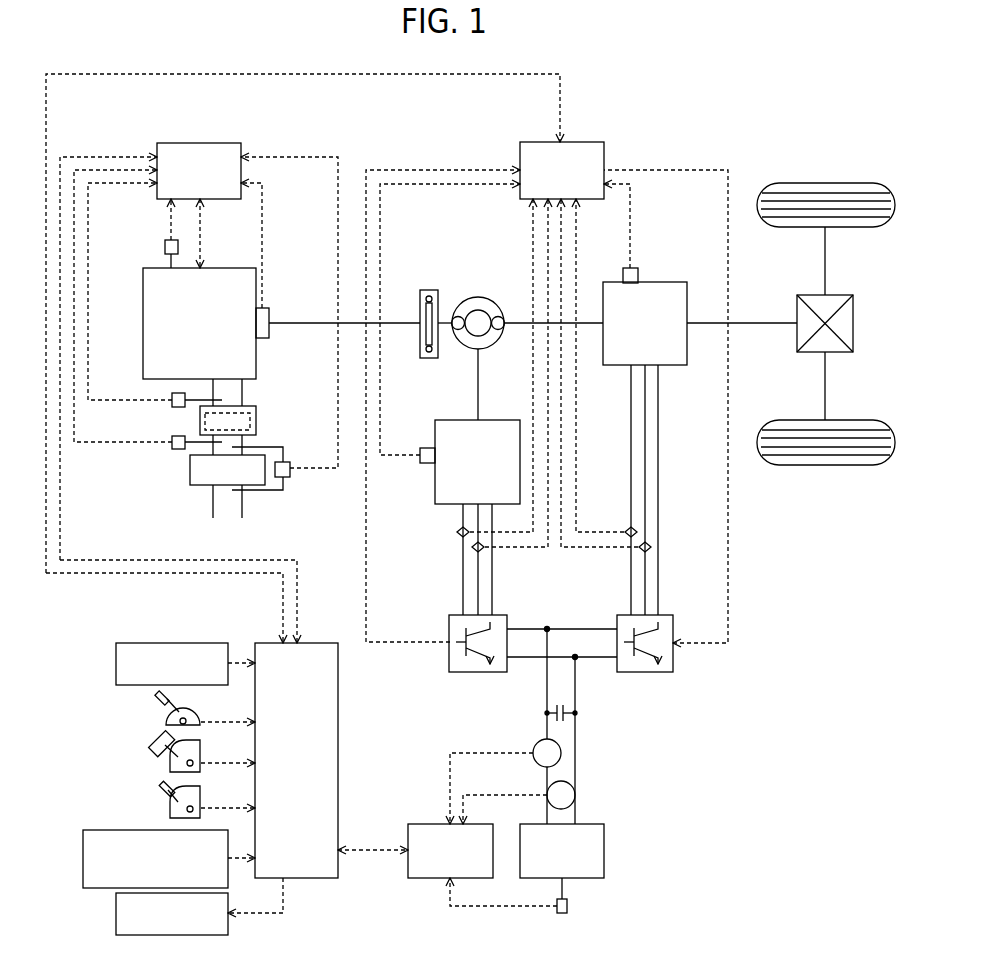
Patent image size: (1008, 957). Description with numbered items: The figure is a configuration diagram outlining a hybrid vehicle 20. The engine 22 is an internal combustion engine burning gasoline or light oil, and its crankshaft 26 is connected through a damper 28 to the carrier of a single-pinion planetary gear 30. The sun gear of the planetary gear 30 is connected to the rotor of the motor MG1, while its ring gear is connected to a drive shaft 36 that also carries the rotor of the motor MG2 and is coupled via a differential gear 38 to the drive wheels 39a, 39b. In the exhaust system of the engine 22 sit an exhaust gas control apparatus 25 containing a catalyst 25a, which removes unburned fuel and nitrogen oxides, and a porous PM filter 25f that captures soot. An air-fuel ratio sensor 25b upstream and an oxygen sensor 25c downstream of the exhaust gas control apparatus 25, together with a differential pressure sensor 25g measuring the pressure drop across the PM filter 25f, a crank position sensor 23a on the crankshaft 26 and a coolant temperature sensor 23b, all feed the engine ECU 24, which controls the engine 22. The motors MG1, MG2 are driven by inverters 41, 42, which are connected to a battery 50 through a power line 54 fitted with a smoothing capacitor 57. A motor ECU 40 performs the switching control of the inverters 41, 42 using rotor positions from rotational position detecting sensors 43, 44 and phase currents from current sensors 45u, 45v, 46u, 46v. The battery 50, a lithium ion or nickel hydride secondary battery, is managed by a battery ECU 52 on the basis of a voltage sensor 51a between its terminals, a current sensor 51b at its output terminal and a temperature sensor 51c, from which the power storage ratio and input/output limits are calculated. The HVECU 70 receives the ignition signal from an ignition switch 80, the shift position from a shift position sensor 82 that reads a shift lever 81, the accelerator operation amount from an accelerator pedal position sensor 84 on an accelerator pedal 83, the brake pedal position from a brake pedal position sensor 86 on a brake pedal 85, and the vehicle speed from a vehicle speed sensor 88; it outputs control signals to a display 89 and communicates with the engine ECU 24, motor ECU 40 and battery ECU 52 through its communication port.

The hybrid vehicle 20 is at (673, 112).
The engine 22 is at (220, 268).
The crank position sensor 23a is at (264, 308).
The coolant temperature sensor 23b is at (165, 247).
The engine ECU 24 is at (219, 143).
The exhaust gas control apparatus 25 is at (258, 416).
The catalyst 25a is at (255, 426).
The air-fuel ratio sensor 25b is at (172, 398).
The oxygen sensor 25c is at (172, 441).
The PM filter 25f is at (190, 470).
The differential pressure sensor 25g is at (284, 478).
The crankshaft 26 is at (400, 320).
The damper 28 is at (428, 290).
The planetary gear 30 is at (478, 297).
The drive shaft 36 is at (770, 322).
The differential gear 38 is at (838, 295).
The drive wheel 39a is at (826, 183).
The drive wheel 39b is at (826, 465).
The motor ECU 40 is at (578, 142).
The inverter 41 is at (500, 615).
The inverter 42 is at (668, 615).
The rotational position detecting sensor 43 is at (428, 465).
The rotational position detecting sensor 44 is at (633, 268).
The current sensor 45u is at (457, 532).
The current sensor 45v is at (472, 547).
The current sensor 46u is at (637, 532).
The current sensor 46v is at (651, 547).
The battery 50 is at (604, 852).
The voltage sensor 51a is at (576, 794).
The current sensor 51b is at (562, 752).
The temperature sensor 51c is at (568, 906).
The battery ECU 52 is at (428, 824).
The power line 54 is at (575, 690).
The smoothing capacitor 57 is at (568, 708).
The HVECU 70 is at (318, 643).
The ignition switch 80 is at (116, 661).
The shift lever 81 is at (163, 712).
The shift position sensor 82 is at (166, 722).
The accelerator pedal 83 is at (150, 745).
The accelerator pedal position sensor 84 is at (170, 765).
The brake pedal 85 is at (163, 790).
The brake pedal position sensor 86 is at (170, 811).
The vehicle speed sensor 88 is at (83, 858).
The display 89 is at (116, 912).
The motor MG1 is at (450, 420).
The motor MG2 is at (672, 282).